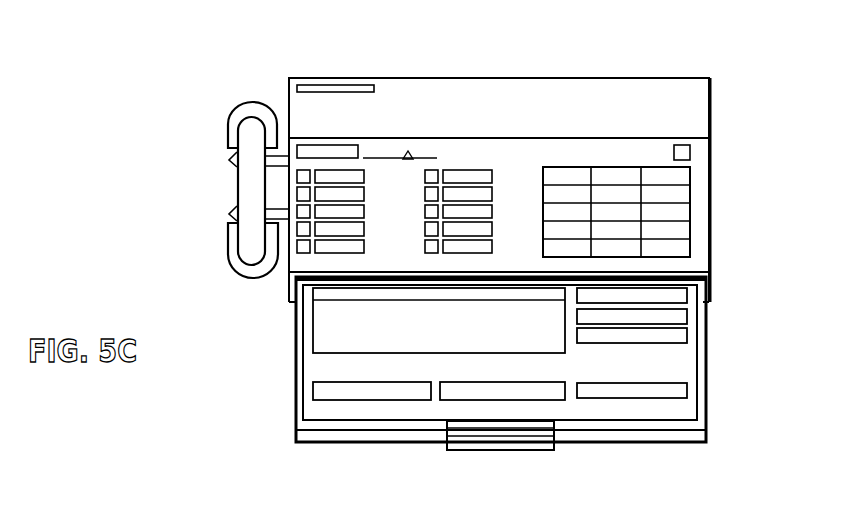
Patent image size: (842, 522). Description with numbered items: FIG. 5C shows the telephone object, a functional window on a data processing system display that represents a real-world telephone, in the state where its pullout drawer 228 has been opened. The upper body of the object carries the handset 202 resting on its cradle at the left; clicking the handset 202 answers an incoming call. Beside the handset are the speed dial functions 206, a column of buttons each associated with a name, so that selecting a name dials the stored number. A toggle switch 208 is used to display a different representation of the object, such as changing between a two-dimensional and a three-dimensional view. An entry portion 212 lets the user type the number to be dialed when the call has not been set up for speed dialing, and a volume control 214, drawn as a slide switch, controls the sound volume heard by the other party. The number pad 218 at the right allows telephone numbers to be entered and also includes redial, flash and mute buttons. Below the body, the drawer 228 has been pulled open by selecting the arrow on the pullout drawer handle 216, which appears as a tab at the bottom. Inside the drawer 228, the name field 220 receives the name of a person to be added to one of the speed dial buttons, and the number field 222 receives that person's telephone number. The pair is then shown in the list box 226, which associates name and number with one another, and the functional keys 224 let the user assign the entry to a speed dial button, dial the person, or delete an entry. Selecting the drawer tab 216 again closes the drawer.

The handset 202 is at (249, 102).
The speed dial functions 206 is at (433, 173).
The toggle switch 208 is at (317, 152).
The entry portion 212 is at (642, 105).
The volume control 214 is at (408, 152).
The pullout drawer handle 216 is at (508, 450).
The number pad 218 is at (692, 223).
The name field 220 is at (320, 393).
The number field 222 is at (547, 392).
The functional keys 224 is at (690, 325).
The list box 226 is at (357, 318).
The drawer 228 is at (317, 443).